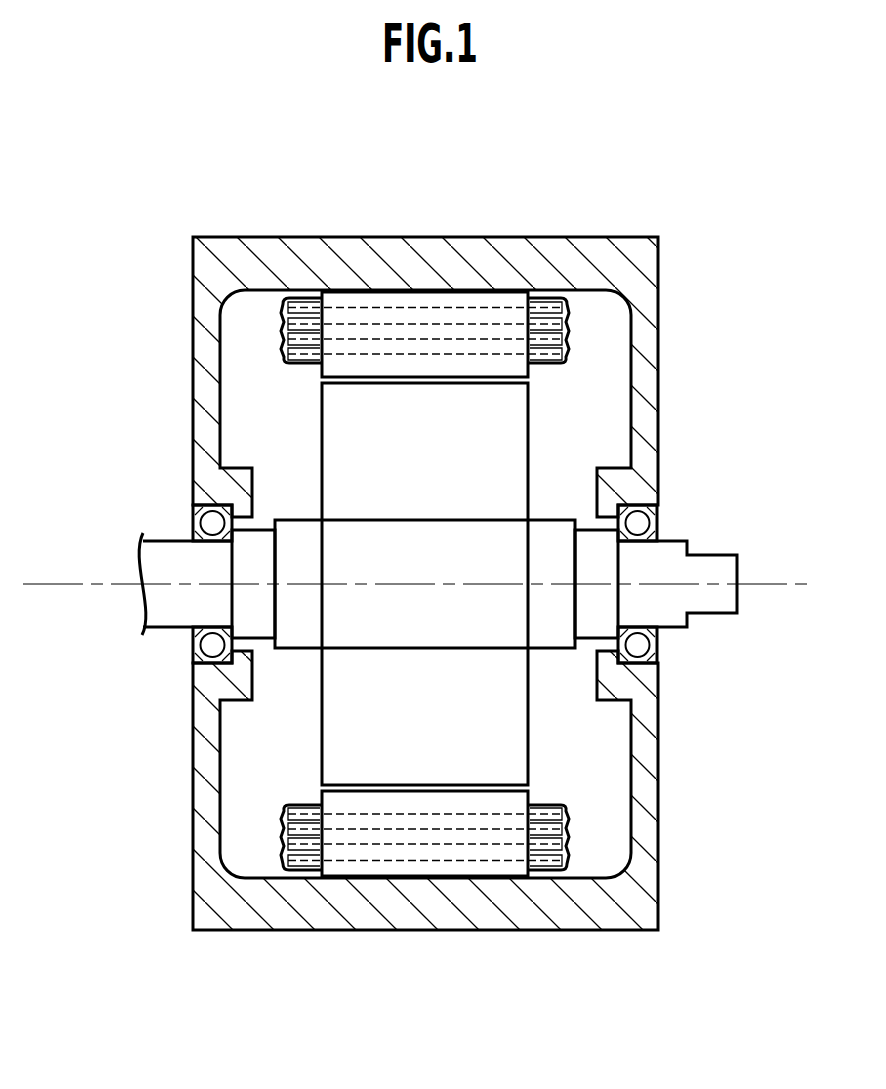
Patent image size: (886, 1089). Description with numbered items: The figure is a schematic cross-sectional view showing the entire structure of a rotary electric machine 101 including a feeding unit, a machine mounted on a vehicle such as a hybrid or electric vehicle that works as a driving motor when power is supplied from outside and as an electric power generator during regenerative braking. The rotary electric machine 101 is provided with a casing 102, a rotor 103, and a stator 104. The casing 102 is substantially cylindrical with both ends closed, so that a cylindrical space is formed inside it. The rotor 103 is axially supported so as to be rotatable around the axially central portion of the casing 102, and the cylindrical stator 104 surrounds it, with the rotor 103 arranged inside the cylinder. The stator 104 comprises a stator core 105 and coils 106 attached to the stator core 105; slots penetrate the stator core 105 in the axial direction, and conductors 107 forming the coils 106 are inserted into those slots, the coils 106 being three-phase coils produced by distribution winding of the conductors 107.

The rotary electric machine 101 is at (682, 212).
The casing 102 is at (647, 298).
The rotor 103 is at (510, 433).
The stator 104 is at (462, 297).
The stator core 105 is at (385, 297).
The coils 106 is at (548, 307).
The conductors 107 is at (303, 302).